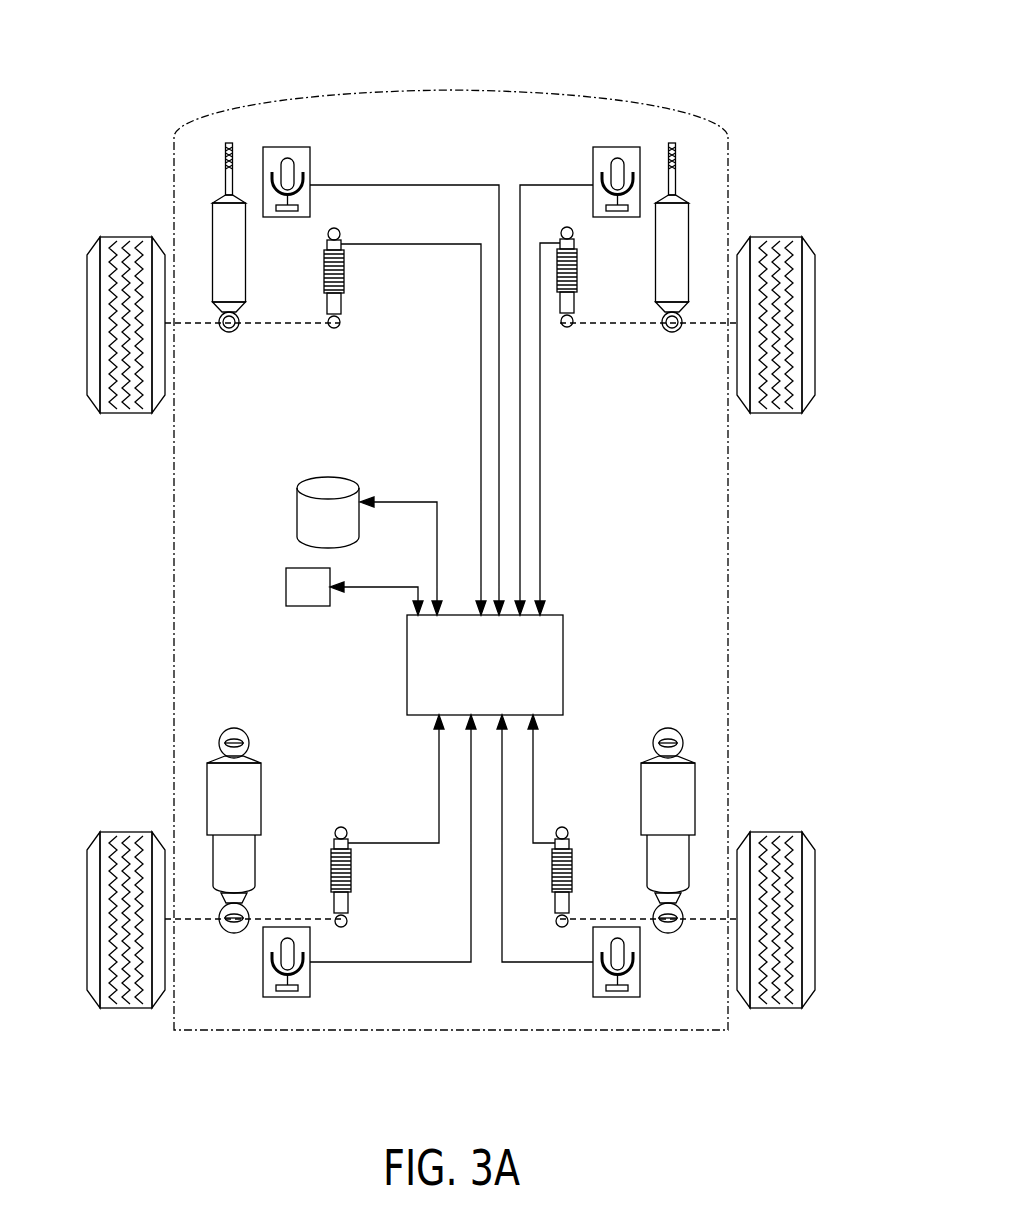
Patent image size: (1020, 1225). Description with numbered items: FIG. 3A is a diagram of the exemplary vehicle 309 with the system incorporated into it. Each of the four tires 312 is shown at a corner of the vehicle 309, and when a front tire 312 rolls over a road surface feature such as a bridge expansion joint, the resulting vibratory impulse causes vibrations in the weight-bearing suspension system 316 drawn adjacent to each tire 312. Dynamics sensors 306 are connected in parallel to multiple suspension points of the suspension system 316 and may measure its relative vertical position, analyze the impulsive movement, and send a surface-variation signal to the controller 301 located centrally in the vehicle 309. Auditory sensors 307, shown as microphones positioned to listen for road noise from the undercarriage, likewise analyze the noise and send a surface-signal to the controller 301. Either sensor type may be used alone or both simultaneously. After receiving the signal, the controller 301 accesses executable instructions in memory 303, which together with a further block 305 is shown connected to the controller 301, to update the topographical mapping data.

The controller 301 is at (565, 650).
The memory 303 is at (330, 475).
The output device 305 is at (286, 584).
The dynamics sensor 306 is at (345, 272).
The auditory sensor 307 is at (312, 158).
The vehicle 309 is at (214, 86).
The tire 312 is at (100, 317).
The suspension system 316 is at (229, 254).